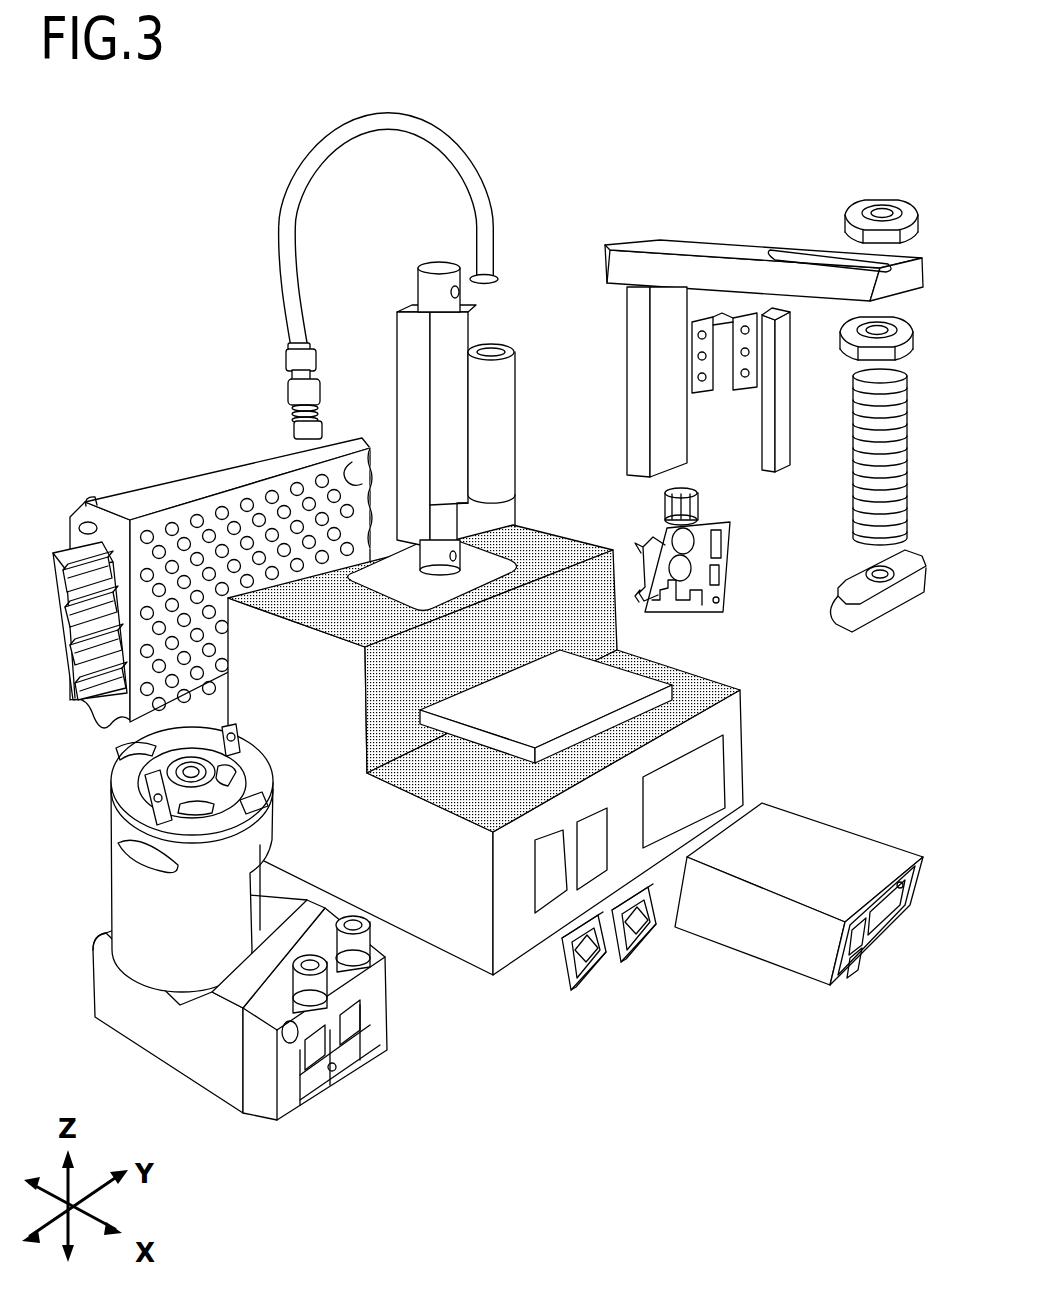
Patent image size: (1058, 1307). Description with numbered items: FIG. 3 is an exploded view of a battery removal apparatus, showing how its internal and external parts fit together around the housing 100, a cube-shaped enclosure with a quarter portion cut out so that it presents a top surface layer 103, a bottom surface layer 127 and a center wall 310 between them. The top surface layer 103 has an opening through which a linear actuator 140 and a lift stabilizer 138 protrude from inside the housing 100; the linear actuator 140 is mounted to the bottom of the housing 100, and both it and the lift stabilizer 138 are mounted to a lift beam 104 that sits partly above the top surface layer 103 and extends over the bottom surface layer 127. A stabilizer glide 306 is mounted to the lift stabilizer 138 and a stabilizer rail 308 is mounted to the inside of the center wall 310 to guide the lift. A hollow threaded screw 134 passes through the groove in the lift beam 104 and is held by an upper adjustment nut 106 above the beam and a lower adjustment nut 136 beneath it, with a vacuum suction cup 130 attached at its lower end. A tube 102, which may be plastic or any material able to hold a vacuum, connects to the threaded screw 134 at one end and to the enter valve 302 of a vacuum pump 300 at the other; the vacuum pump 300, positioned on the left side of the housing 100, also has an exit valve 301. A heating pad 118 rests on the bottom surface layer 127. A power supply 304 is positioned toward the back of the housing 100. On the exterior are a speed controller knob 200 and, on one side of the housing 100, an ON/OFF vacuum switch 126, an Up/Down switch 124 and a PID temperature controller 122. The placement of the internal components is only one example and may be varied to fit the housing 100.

The housing 100 is at (485, 800).
The tube 102 is at (283, 232).
The top surface layer 103 is at (340, 597).
The lift beam 104 is at (680, 260).
The upper adjustment nut 106 is at (853, 220).
The heating pad 118 is at (627, 687).
The PID temperature controller 122 is at (862, 945).
The Up/Down switch 124 is at (640, 932).
The ON/OFF vacuum switch 126 is at (593, 967).
The bottom surface layer 127 is at (478, 775).
The vacuum suction cup 130 is at (857, 612).
The hollow threaded screw 134 is at (855, 518).
The lower adjustment nut 136 is at (857, 338).
The lift stabilizer 138 is at (627, 397).
The linear actuator 140 is at (413, 396).
The speed controller knob 200 is at (667, 498).
The vacuum pump 300 is at (167, 1005).
The exit valve 301 is at (370, 933).
The enter valve 302 is at (341, 1010).
The power supply 304 is at (140, 498).
The stabilizer glide 306 is at (703, 375).
The stabilizer rail 308 is at (783, 417).
The center wall 310 is at (387, 700).